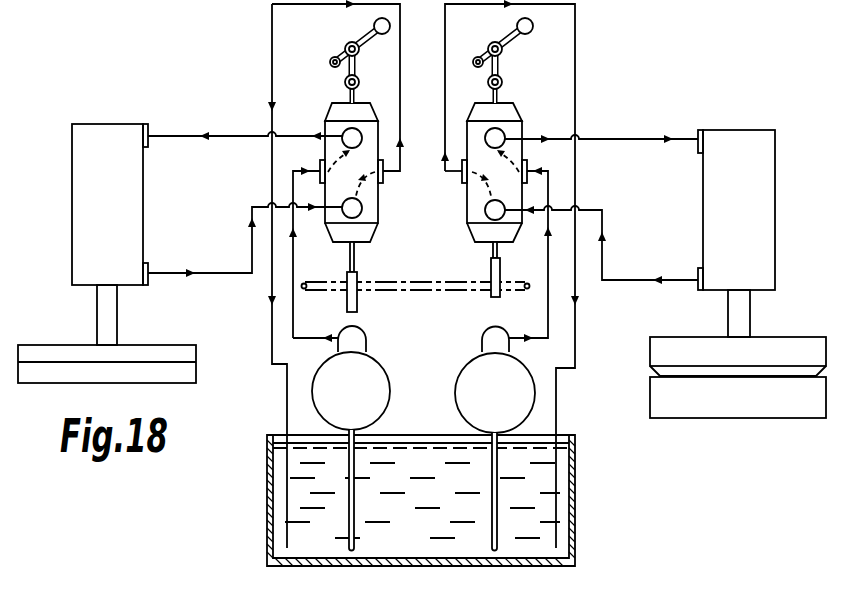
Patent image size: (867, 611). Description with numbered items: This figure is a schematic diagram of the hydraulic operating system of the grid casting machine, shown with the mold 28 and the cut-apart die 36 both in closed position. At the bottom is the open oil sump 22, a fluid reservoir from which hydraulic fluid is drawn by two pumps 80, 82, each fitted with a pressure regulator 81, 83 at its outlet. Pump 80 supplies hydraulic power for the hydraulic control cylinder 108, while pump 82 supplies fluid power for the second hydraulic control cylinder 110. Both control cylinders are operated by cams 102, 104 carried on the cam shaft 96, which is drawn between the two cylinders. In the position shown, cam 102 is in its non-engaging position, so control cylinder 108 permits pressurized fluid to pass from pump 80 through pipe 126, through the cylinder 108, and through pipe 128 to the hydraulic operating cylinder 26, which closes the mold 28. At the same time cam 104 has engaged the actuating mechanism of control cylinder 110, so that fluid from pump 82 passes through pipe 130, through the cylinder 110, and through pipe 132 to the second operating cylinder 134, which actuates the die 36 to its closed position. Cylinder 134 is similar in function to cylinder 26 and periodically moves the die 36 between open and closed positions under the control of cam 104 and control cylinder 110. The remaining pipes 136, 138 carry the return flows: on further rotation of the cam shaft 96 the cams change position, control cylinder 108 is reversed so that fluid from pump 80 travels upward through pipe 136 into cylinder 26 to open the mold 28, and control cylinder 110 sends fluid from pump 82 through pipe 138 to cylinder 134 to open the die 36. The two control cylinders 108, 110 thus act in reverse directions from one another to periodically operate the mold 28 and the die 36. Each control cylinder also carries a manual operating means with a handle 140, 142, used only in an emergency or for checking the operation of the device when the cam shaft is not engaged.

The fluid reservoir 22 is at (576, 488).
The hydraulic operating cylinder 26 is at (112, 124).
The two-section mold 28 is at (62, 345).
The die 36 is at (785, 337).
The pump 80 is at (381, 374).
The pressure regulator 81 is at (367, 340).
The pump 82 is at (526, 379).
The pressure regulator 83 is at (505, 339).
The cam shaft 96 is at (433, 281).
The cam 102 is at (347, 298).
The cam 104 is at (503, 262).
The hydraulic control cylinder 108 is at (383, 207).
The hydraulic control cylinder 110 is at (467, 207).
The pipe 126 is at (295, 258).
The pipe 128 is at (230, 136).
The pipe 130 is at (549, 284).
The pipe 132 is at (636, 135).
The second operating cylinder 134 is at (740, 122).
The pipe 136 is at (210, 273).
The pipe 138 is at (612, 280).
The handle 140 is at (343, 49).
The handle 142 is at (486, 49).